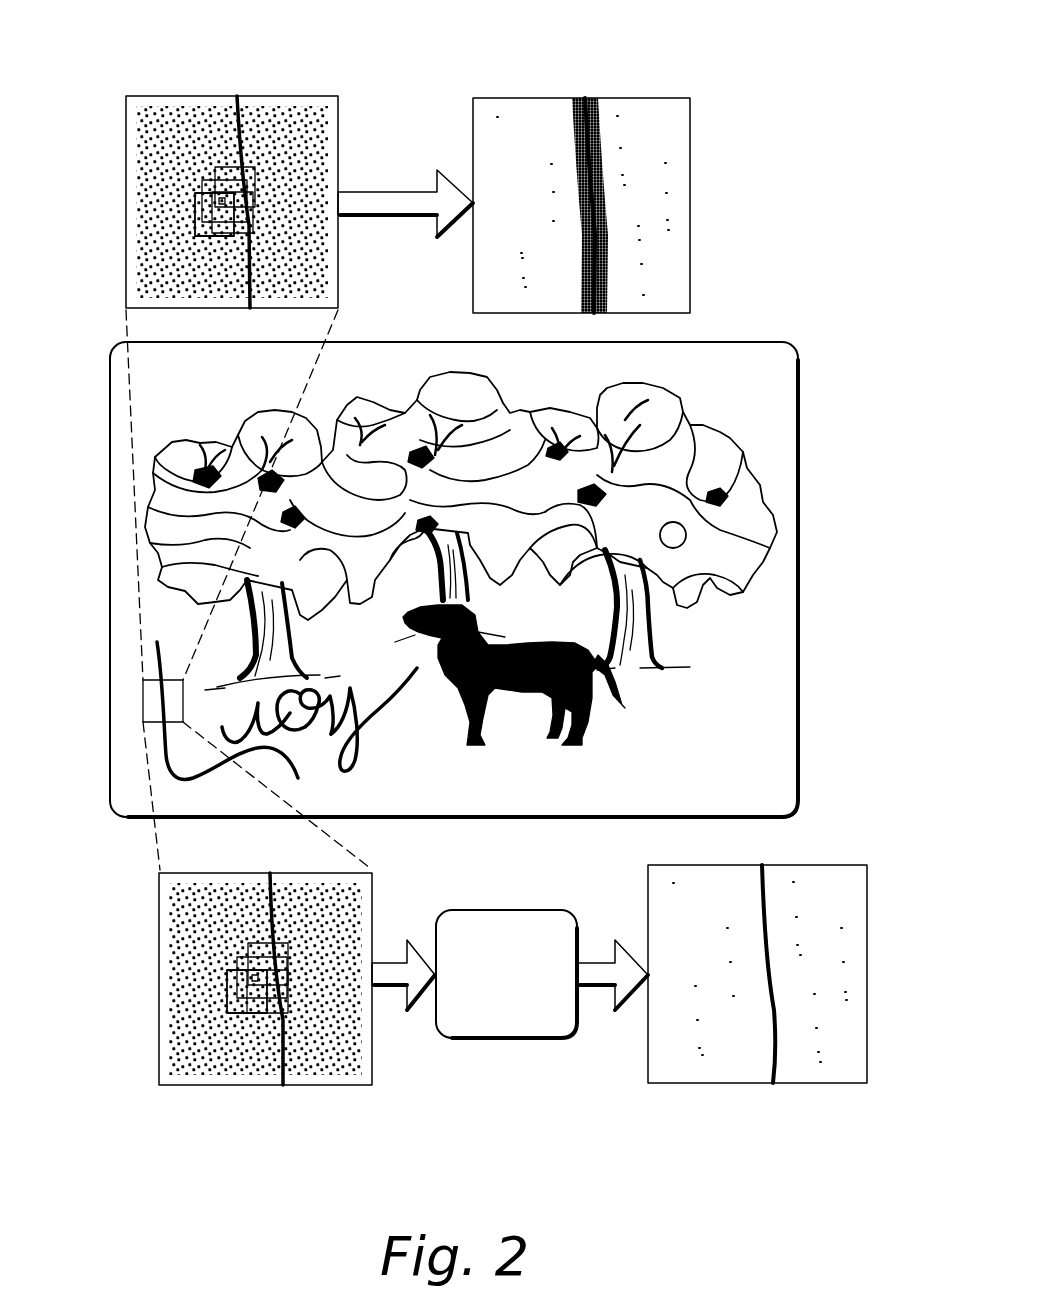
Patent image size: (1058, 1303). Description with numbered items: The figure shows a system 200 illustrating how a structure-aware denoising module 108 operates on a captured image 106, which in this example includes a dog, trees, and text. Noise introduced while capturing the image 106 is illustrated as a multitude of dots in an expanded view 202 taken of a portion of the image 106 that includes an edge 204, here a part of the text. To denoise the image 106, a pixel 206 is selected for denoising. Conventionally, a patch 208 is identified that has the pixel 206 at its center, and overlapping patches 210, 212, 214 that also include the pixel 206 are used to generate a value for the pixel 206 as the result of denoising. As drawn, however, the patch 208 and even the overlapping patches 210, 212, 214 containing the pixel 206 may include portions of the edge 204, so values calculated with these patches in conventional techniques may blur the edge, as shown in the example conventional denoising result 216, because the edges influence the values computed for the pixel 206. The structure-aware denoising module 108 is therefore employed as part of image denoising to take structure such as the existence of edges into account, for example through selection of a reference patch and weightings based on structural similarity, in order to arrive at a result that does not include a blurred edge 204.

The system 200 is at (165, 68).
The expanded view 202 is at (125, 96).
The edge 204 is at (238, 96).
The pixel 206 is at (196, 232).
The patch 208 is at (203, 180).
The overlapping patch 210 is at (255, 167).
The overlapping patch 212 is at (253, 220).
The overlapping patch 214 is at (214, 236).
The conventional denoising result 216 is at (687, 76).
The image 106 is at (755, 342).
The structure-aware denoising module 108 is at (506, 974).